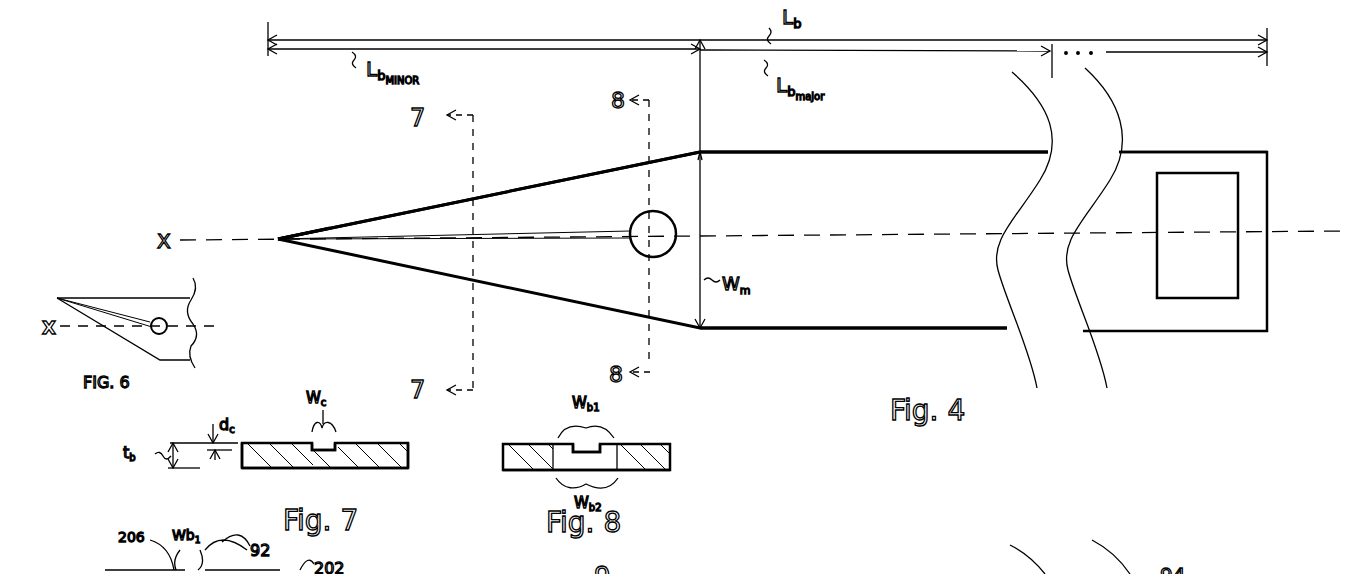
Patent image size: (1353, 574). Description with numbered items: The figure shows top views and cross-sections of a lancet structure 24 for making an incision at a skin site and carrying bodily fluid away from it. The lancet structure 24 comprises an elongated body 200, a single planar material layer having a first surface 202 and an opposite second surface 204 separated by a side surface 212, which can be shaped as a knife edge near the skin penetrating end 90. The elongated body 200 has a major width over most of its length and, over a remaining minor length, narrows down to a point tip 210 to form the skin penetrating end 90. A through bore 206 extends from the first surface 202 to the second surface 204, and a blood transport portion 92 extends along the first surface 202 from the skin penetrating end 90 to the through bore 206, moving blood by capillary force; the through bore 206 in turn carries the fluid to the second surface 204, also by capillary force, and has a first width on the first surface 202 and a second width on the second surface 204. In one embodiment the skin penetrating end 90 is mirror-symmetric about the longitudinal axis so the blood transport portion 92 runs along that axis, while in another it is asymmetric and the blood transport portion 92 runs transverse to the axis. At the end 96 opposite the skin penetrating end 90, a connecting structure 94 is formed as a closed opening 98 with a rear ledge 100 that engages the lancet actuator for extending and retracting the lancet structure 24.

In FIG. 4, the lancet structure 24 is at (874, 148).
In FIG. 4, the skin penetrating end 90 is at (372, 213).
In FIG. 6, the skin penetrating end 90 is at (108, 294).
In FIG. 4, the blood transport portion 92 is at (370, 246).
In FIG. 6, the blood transport portion 92 is at (128, 312).
In FIG. 7, the blood transport portion 92 is at (332, 452).
In FIG. 8, the blood transport portion 92 is at (600, 450).
In FIG. 4, the connecting structure 94 is at (1172, 149).
In FIG. 4, the end 96 is at (1266, 218).
In FIG. 4, the closed opening 98 is at (1208, 174).
In FIG. 4, the rear ledge 100 is at (1268, 278).
In FIG. 4, the elongated body 200 is at (754, 152).
In FIG. 4, the first surface 202 is at (862, 305).
In FIG. 7, the first surface 202 is at (372, 442).
In FIG. 8, the first surface 202 is at (506, 442).
In FIG. 7, the second surface 204 is at (390, 472).
In FIG. 8, the second surface 204 is at (520, 470).
In FIG. 4, the through bore 206 is at (638, 248).
In FIG. 6, the through bore 206 is at (166, 334).
In FIG. 8, the through bore 206 is at (618, 468).
In FIG. 4, the point tip 210 is at (278, 239).
In FIG. 4, the side surface 212 is at (523, 189).
In FIG. 7, the side surface 212 is at (238, 454).